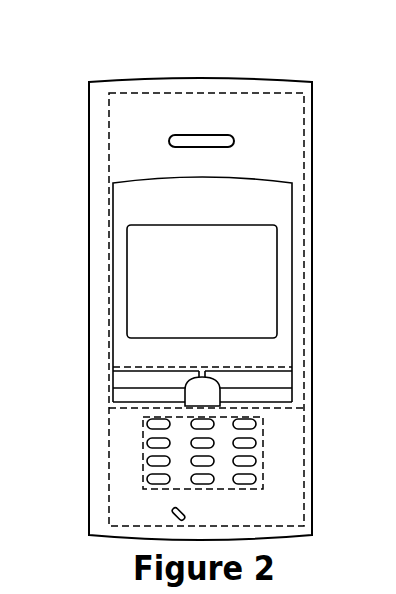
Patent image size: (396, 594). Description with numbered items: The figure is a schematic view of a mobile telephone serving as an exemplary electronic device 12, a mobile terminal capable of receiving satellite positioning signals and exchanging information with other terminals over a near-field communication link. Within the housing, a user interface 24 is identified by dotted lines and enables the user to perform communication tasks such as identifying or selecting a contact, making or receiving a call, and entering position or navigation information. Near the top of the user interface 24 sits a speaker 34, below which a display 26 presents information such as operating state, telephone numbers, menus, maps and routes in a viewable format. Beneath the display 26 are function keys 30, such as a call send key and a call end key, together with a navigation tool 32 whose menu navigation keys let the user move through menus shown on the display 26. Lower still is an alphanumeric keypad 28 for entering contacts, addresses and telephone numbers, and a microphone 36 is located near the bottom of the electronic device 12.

The electronic device 12 is at (250, 73).
The user interface 24 is at (307, 187).
The display 26 is at (202, 281).
The alphanumeric keypad 28 is at (263, 460).
The function keys 30 is at (297, 383).
The navigation tool 32 is at (191, 389).
The speaker 34 is at (213, 133).
The microphone 36 is at (186, 518).